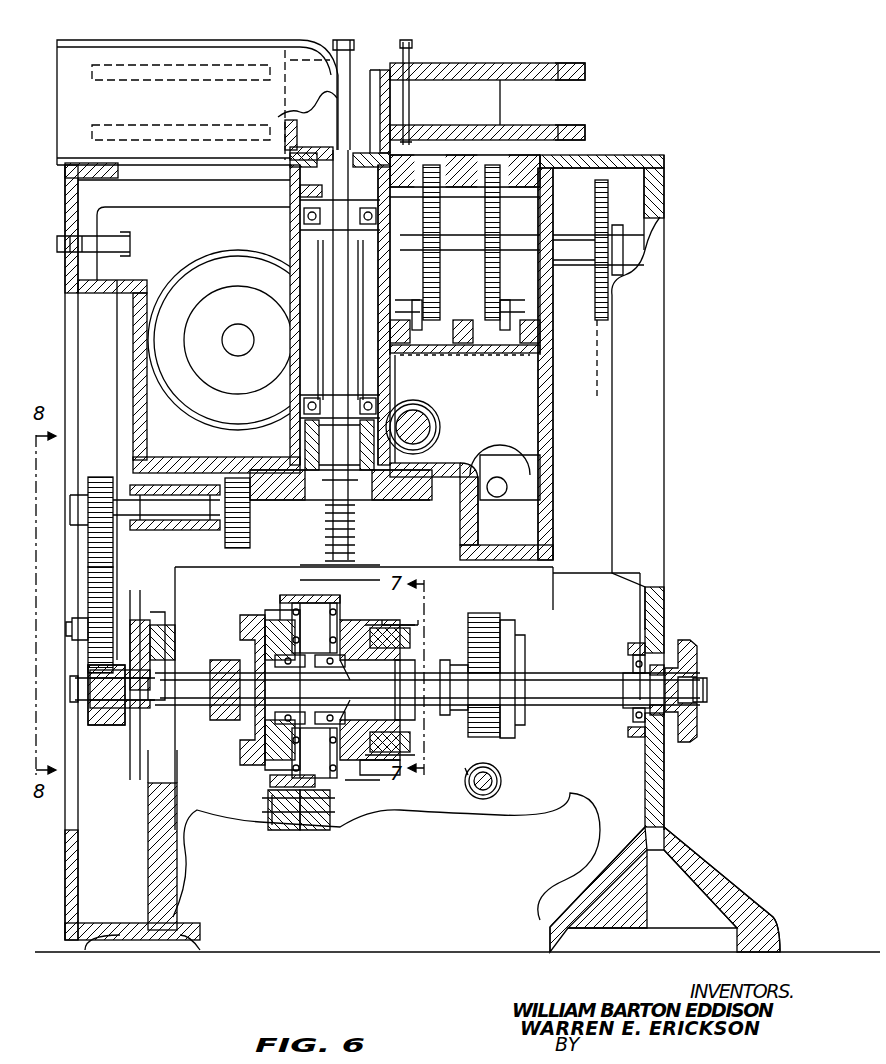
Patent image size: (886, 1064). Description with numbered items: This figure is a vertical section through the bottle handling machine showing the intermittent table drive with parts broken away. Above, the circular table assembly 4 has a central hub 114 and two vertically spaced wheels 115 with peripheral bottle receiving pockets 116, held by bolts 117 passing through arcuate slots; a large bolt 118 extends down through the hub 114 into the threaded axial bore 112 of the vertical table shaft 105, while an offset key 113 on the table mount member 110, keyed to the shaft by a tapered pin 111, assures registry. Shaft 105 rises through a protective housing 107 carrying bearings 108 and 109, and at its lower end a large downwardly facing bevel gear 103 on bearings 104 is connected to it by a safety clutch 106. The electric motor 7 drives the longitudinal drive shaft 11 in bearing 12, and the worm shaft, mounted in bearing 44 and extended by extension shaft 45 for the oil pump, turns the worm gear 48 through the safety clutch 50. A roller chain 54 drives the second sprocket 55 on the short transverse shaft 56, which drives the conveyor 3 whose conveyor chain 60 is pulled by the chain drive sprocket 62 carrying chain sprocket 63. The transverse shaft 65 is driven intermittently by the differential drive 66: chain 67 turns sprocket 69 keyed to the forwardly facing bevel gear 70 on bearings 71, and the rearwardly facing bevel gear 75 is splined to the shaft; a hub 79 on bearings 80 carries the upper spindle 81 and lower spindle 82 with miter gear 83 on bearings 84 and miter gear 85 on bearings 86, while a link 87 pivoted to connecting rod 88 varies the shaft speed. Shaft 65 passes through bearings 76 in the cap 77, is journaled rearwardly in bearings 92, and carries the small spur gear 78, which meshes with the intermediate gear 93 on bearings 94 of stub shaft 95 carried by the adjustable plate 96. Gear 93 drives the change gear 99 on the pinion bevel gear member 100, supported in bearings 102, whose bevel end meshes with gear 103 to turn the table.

The longitudinal conveyor 3 is at (463, 141).
The circular table assembly 4 is at (488, 59).
The electric motor 7 is at (210, 252).
The longitudinal drive shaft 11 is at (428, 434).
The bearing 12 is at (413, 402).
The bearing 44 is at (502, 774).
The extension shaft 45 is at (468, 772).
The worm gear 48 is at (484, 618).
The safety clutch 50 is at (510, 616).
The roller chain 54 is at (594, 446).
The second sprocket 55 is at (595, 197).
The short transverse shaft 56 is at (630, 235).
The conveyor chain 60 is at (515, 155).
The chain drive sprocket 62 is at (500, 292).
The chain sprocket 63 is at (478, 248).
The transverse shaft 65 is at (574, 678).
The differential drive 66 is at (254, 808).
The chain 67 is at (398, 622).
The sprocket 69 is at (408, 628).
The forwardly facing bevel gear 70 is at (362, 625).
The bearings 71 is at (398, 700).
The rearwardly facing bevel gear 75 is at (245, 633).
The bearings 76 is at (172, 695).
The cap 77 is at (160, 766).
The small spur gear 78 is at (102, 724).
The hub 79 is at (290, 667).
The bearings 80 is at (332, 667).
The upper spindle 81 is at (295, 592).
The lower spindle 82 is at (280, 779).
The miter gear 83 is at (265, 620).
The bearings 84 is at (312, 640).
The miter gear 85 is at (358, 762).
The bearings 86 is at (302, 745).
The link 87 is at (318, 830).
The connecting rod 88 is at (287, 830).
The bearings 92 is at (628, 720).
The intermediate gear 93 is at (88, 588).
The bearings 94 is at (160, 605).
The stub shaft 95 is at (72, 628).
The plate 96 is at (160, 638).
The change gear 99 is at (98, 477).
The pinion bevel gear member 100 is at (248, 520).
The bearings 102 is at (140, 508).
The large downwardly facing bevel gear 103 is at (462, 498).
The bearings 104 is at (328, 478).
The vertical table shaft 105 is at (325, 366).
The safety clutch 106 is at (380, 505).
The protective housing 107 is at (378, 325).
The bearings 108 is at (330, 398).
The bearings 109 is at (355, 232).
The table mount member 110 is at (296, 168).
The tapered pin 111 is at (302, 224).
The threaded axial bore 112 is at (302, 190).
The offset key 113 is at (283, 152).
The hub 114 is at (392, 104).
The wheels 115 is at (508, 95).
The bottle receiving pockets 116 is at (560, 63).
The bolts 117 is at (410, 62).
The large bolt 118 is at (340, 60).